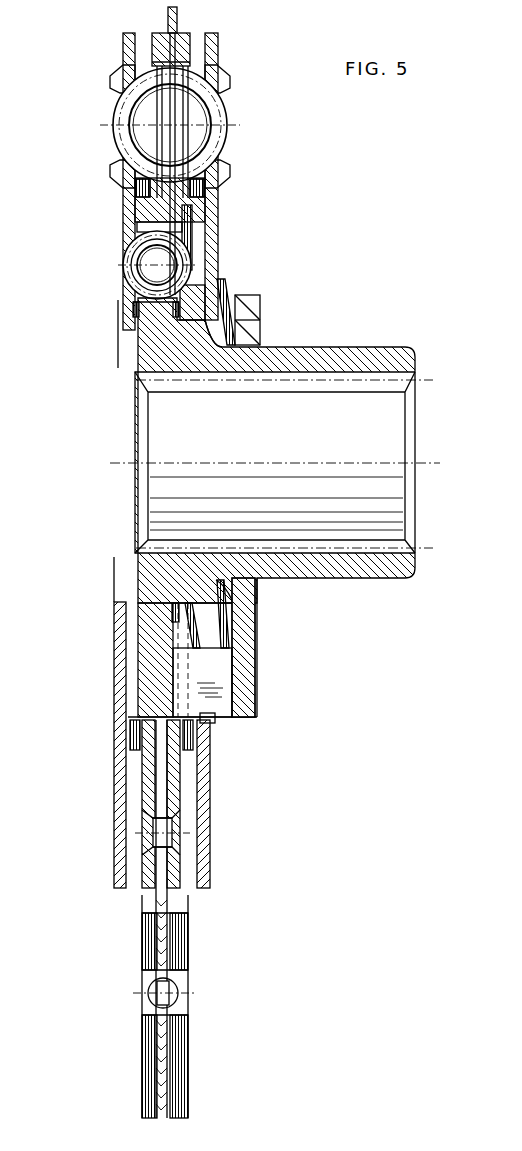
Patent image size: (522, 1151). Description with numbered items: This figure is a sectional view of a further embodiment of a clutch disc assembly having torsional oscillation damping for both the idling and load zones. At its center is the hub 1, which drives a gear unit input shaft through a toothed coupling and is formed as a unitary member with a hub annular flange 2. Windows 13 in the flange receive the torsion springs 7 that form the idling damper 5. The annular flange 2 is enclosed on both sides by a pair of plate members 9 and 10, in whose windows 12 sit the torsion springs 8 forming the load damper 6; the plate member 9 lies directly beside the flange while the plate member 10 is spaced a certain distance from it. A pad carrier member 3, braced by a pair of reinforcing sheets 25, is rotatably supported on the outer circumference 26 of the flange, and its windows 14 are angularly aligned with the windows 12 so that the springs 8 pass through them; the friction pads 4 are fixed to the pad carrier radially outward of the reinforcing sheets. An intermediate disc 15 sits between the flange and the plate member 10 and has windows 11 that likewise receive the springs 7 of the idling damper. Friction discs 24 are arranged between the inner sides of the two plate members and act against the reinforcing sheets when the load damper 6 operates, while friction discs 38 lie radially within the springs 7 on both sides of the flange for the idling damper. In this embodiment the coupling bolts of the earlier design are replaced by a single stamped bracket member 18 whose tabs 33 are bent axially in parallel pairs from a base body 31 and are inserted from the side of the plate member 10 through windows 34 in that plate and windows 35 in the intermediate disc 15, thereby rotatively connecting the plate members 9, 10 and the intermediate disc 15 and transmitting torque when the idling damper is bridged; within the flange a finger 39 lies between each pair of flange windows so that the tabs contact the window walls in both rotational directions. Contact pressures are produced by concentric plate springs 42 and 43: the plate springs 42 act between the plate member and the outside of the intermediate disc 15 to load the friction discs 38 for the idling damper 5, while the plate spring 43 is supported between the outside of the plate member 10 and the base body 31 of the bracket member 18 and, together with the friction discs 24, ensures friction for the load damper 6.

The hub 1 is at (385, 570).
The hub annular flange 2 is at (163, 212).
The pad carrier member 3 is at (160, 902).
The friction pads 4 is at (147, 1055).
The idling damper 5 is at (252, 257).
The load damper 6 is at (252, 143).
The torsion springs 7 is at (132, 252).
The torsion springs 8 is at (222, 116).
The plate member 9 is at (123, 822).
The plate member 10 is at (205, 818).
The windows 11 is at (120, 277).
The windows 12 is at (118, 67).
The windows 13 is at (170, 228).
The windows 14 is at (190, 64).
The intermediate disc 15 is at (192, 210).
The bracket member 18 is at (270, 645).
The friction discs 24 is at (140, 755).
The reinforcing sheets 25 is at (147, 865).
The outer circumference 26 is at (130, 196).
The base body 31 is at (248, 610).
The tabs 33 is at (215, 682).
The windows 34 is at (215, 722).
The windows 35 is at (182, 640).
The friction discs 38 is at (172, 305).
The finger 39 is at (157, 672).
The plate springs 42 is at (230, 302).
The plate spring 43 is at (262, 315).